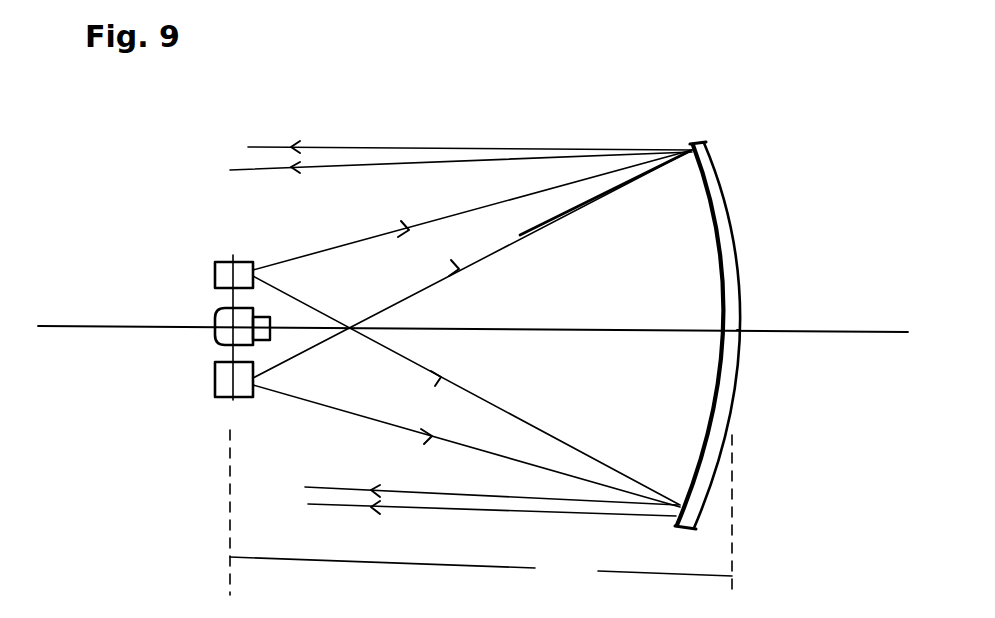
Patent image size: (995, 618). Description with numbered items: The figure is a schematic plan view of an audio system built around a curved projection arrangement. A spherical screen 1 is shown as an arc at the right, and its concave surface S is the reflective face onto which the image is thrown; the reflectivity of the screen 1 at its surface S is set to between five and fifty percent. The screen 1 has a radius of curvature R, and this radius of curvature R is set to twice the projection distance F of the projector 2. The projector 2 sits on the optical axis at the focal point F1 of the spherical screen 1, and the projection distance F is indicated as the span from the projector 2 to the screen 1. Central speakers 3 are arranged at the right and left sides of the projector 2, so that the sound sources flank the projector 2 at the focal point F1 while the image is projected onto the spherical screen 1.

The spherical screen 1 is at (728, 207).
The projector 2 is at (215, 325).
The central speakers 3 is at (215, 272).
The focal point F1 is at (215, 338).
The radius of curvature R is at (737, 302).
The surface S is at (719, 393).
The projection distance F is at (481, 515).